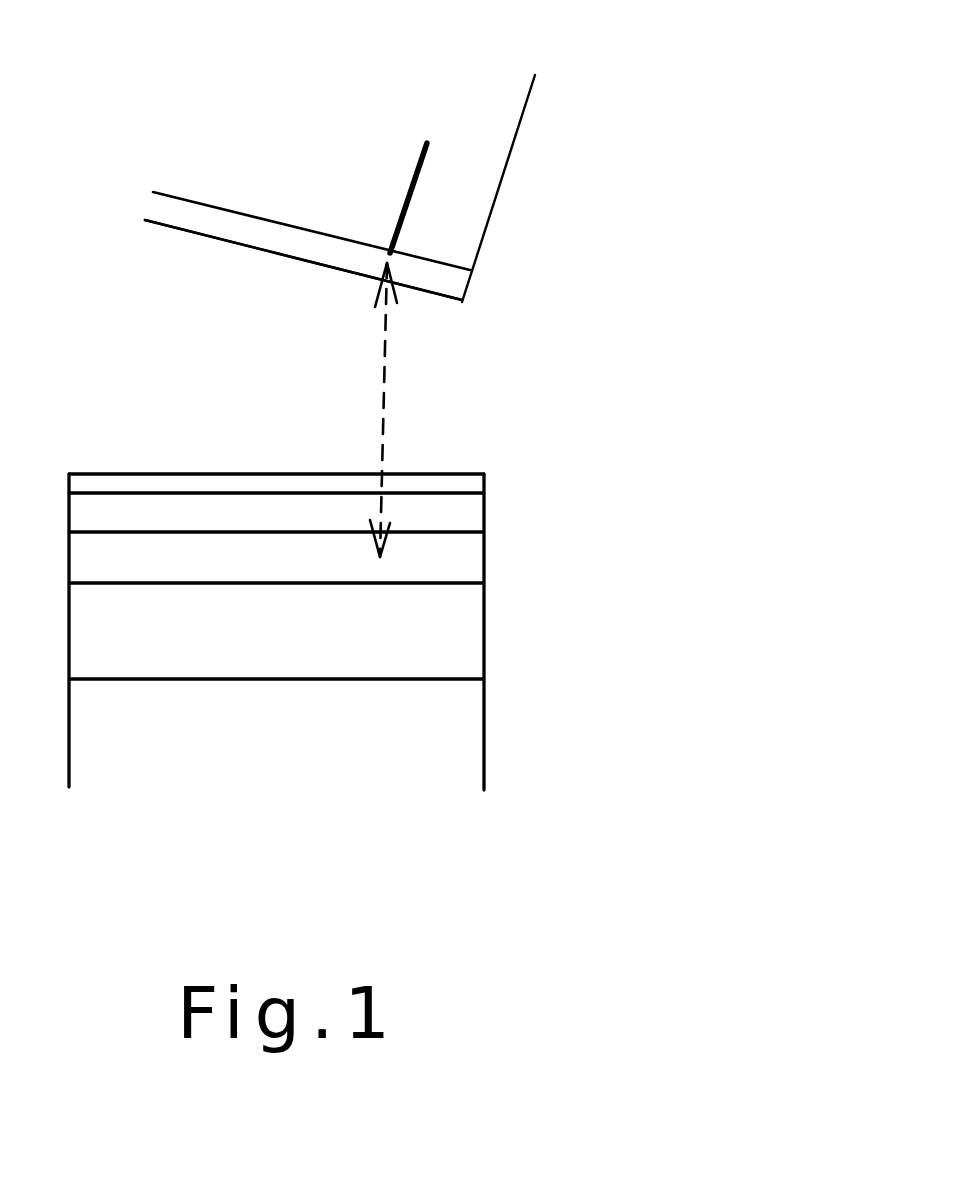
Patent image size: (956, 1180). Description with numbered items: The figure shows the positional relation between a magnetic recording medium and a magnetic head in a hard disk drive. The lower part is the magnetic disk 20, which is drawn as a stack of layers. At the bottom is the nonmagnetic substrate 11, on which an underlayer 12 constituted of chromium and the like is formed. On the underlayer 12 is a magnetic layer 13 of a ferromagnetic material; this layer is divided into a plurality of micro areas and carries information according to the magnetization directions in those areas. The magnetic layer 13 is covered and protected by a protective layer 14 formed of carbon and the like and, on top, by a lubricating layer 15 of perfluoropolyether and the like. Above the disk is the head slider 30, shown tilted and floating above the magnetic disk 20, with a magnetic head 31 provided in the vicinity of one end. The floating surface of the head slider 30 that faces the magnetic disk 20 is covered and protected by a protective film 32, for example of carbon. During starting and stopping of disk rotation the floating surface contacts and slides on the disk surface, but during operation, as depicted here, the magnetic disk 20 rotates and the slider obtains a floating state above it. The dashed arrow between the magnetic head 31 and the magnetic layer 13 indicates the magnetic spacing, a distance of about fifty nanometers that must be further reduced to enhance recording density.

The nonmagnetic substrate 11 is at (460, 732).
The underlayer 12 is at (460, 625).
The magnetic layer 13 is at (465, 557).
The protective layer 14 is at (462, 512).
The lubricating layer 15 is at (467, 487).
The magnetic disk 20 is at (740, 475).
The head slider 30 is at (742, 53).
The magnetic head 31 is at (410, 190).
The protective film 32 is at (450, 282).